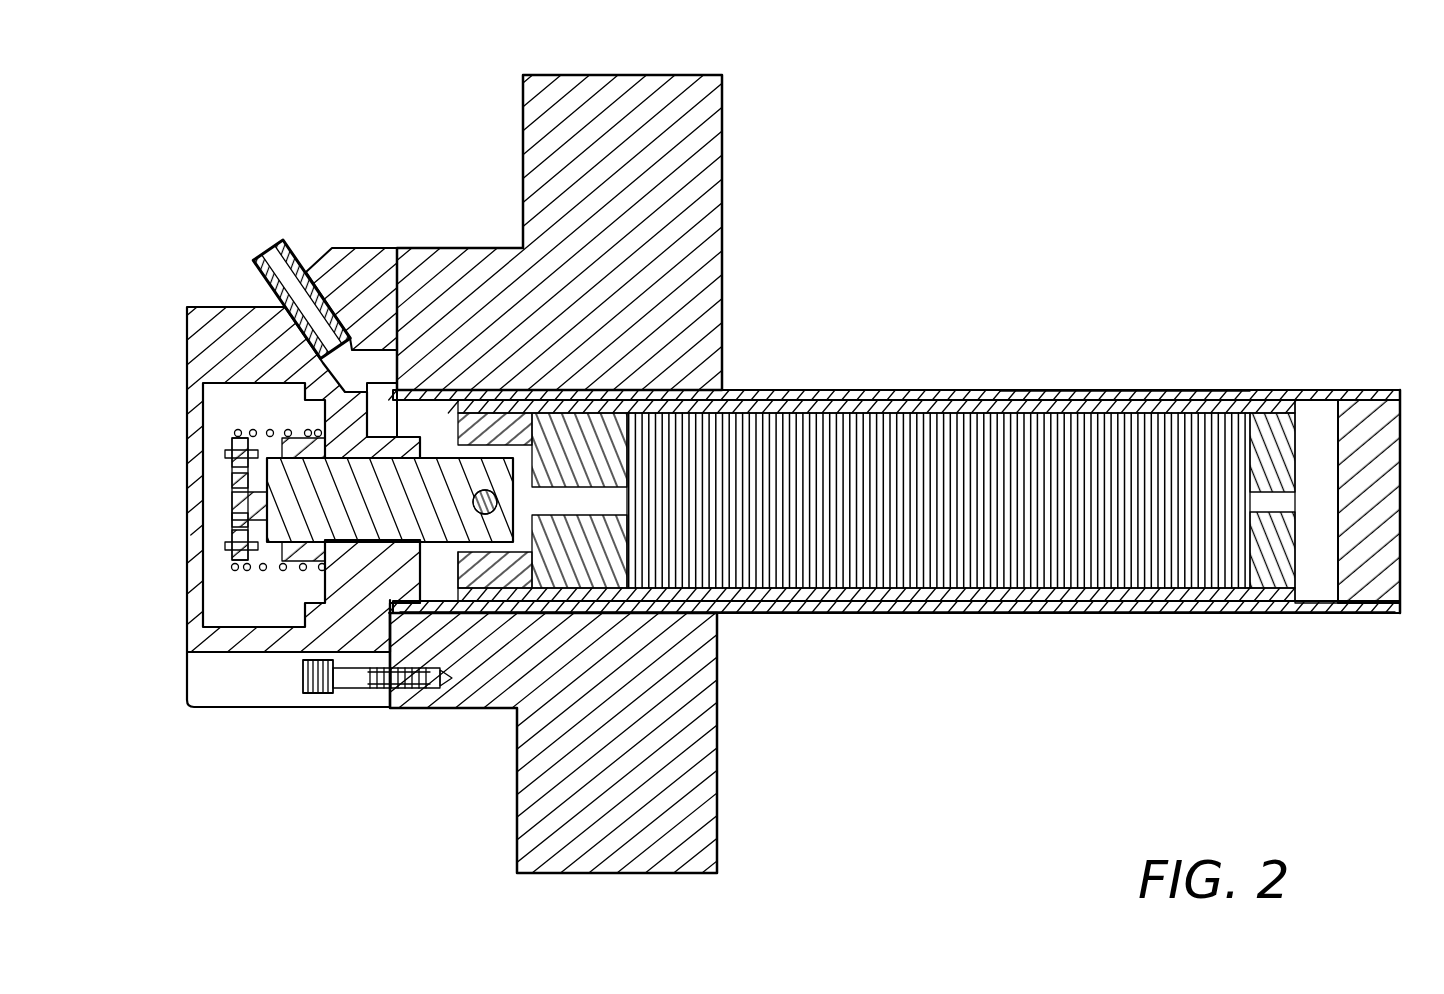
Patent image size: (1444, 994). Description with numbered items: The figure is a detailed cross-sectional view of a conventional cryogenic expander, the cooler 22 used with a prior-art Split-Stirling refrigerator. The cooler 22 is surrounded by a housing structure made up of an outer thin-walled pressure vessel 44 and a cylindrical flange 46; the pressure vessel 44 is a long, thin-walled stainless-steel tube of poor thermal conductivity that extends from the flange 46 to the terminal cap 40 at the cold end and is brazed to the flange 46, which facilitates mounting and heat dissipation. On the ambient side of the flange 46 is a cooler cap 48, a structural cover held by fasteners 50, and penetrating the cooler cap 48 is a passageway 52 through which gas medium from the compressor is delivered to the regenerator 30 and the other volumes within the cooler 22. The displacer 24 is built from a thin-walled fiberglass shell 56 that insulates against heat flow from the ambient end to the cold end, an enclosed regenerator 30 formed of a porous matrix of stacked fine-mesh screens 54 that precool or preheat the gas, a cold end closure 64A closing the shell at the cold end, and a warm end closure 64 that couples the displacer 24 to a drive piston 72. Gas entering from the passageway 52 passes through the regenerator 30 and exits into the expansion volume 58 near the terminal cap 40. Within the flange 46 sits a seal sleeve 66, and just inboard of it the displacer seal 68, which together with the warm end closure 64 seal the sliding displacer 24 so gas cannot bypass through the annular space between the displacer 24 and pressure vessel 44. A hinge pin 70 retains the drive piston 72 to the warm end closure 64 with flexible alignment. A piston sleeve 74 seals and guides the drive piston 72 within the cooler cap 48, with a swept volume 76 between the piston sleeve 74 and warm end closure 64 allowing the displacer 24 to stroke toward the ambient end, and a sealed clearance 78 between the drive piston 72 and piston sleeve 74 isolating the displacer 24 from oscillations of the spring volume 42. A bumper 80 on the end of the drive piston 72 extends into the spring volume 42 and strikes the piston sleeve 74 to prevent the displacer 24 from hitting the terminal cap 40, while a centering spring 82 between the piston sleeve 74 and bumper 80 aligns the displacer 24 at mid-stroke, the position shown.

The cooler 22 is at (1102, 210).
The displacer 24 is at (947, 598).
The regenerator 30 is at (1143, 468).
The terminal cap 40 is at (1385, 400).
The spring volume 42 is at (213, 582).
The pressure vessel 44 is at (1100, 393).
The flange 46 is at (737, 128).
The cooler cap 48 is at (230, 315).
The fastener 50 is at (305, 688).
The passageway 52 is at (290, 237).
The screens 54 is at (968, 467).
The fiberglass shell 56 is at (887, 400).
The expansion volume 58 is at (1320, 420).
The warm end closure 64 is at (606, 452).
The cold end closure 64A is at (1273, 575).
The seal sleeve 66 is at (455, 375).
The displacer seal 68 is at (572, 405).
The hinge pin 70 is at (490, 515).
The drive piston 72 is at (297, 500).
The piston sleeve 74 is at (283, 573).
The swept volume 76 is at (445, 580).
The sealed clearance 78 is at (320, 410).
The bumper 80 is at (245, 478).
The centering spring 82 is at (240, 442).